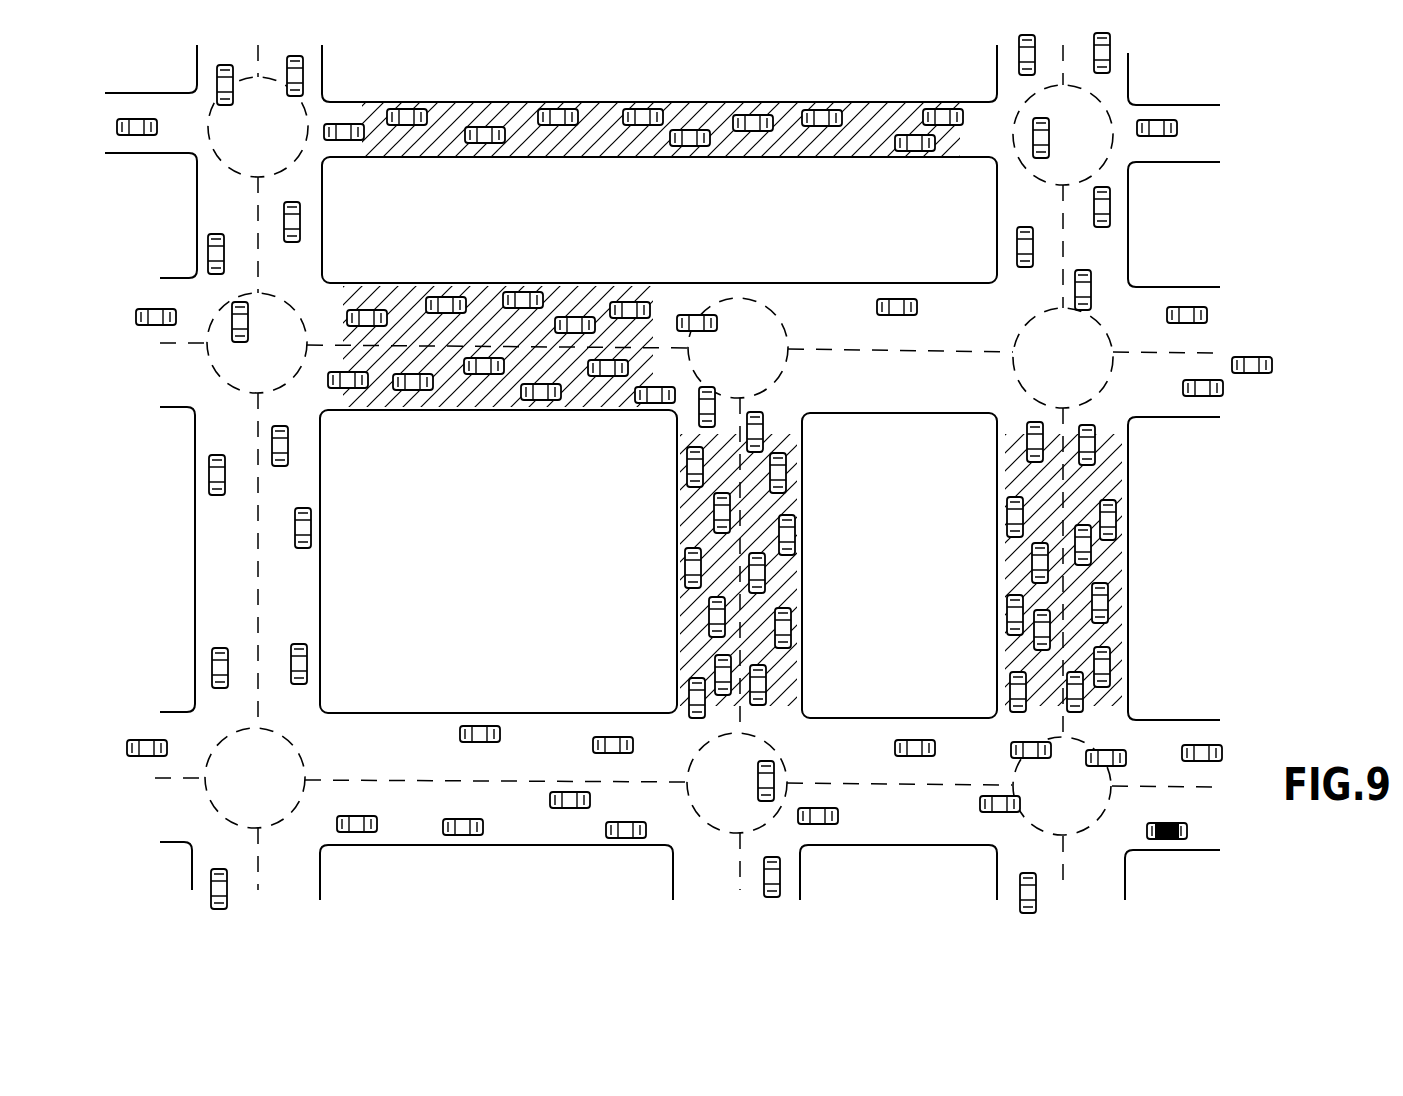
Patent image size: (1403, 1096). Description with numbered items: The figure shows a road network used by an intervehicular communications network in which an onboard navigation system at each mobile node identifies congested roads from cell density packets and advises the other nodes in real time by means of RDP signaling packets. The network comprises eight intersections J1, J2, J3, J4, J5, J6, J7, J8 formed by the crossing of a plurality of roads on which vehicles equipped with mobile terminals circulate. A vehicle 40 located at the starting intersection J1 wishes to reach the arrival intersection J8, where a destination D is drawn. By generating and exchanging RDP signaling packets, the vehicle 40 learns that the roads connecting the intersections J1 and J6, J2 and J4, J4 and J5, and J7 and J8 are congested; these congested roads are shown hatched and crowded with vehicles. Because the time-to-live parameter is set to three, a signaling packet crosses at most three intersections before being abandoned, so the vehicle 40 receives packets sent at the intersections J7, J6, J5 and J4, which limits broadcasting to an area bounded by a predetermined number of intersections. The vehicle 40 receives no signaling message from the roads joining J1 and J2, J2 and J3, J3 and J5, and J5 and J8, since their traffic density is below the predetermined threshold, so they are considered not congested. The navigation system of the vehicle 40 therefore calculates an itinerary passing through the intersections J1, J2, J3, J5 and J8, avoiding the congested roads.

The vehicle 40 is at (134, 120).
The starting intersection J1 is at (252, 177).
The intersection J2 is at (272, 298).
The intersection J3 is at (214, 804).
The intersection J4 is at (760, 302).
The intersection J5 is at (726, 830).
The intersection J6 is at (1104, 107).
The intersection J7 is at (1021, 380).
The arrival intersection J8 is at (1048, 830).
The destination vehicle D is at (1167, 840).